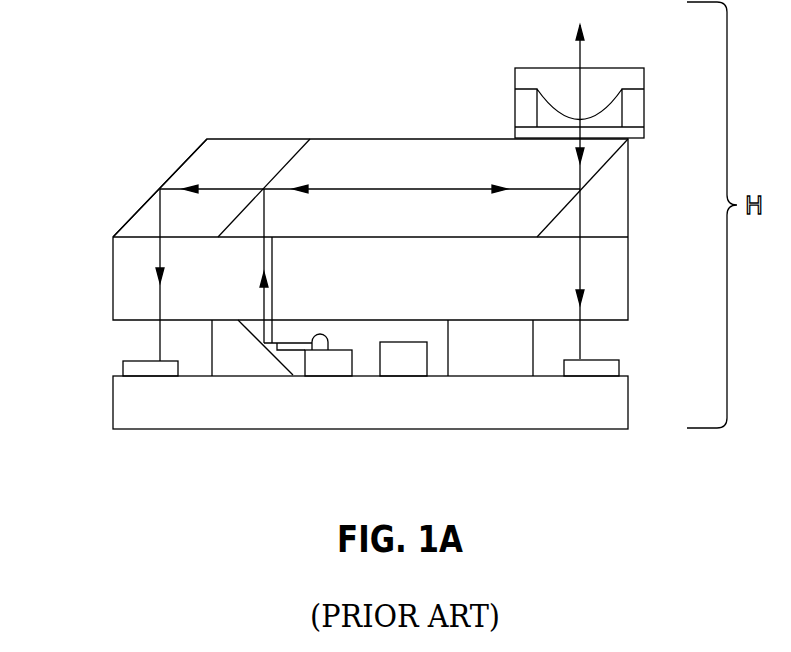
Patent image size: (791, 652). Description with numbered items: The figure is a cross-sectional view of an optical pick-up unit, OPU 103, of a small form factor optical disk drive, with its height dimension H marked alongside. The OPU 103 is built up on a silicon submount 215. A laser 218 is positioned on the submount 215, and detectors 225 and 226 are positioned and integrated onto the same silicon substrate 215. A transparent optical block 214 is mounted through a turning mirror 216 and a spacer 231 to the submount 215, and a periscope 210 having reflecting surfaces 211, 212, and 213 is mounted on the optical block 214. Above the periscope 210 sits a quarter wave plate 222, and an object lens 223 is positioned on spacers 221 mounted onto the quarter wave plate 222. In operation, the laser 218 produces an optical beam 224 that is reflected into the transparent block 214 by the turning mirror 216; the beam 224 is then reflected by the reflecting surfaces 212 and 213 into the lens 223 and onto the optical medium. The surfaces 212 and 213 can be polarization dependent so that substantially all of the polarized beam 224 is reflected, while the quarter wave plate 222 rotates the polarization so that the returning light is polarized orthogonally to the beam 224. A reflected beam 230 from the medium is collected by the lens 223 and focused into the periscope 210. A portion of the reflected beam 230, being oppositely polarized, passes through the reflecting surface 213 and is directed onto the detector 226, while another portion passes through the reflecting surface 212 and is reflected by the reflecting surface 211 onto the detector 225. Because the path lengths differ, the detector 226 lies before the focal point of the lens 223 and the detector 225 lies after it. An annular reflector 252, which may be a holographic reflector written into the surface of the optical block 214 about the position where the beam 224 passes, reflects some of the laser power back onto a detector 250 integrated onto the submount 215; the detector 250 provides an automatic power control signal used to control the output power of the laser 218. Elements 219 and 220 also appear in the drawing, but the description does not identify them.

The optical pick-up unit 103 is at (105, 138).
The periscope 210 is at (135, 213).
The reflecting surface 211 is at (152, 186).
The reflecting surface 212 is at (288, 160).
The reflecting surface 213 is at (595, 173).
The transparent optical block 214 is at (630, 310).
The silicon submount 215 is at (113, 405).
The turning mirror 216 is at (245, 358).
The laser 218 is at (313, 343).
The photodetector 219 is at (408, 358).
The spacer 220 is at (552, 358).
The spacers 221 is at (644, 100).
The quarter wave plate 222 is at (644, 131).
The object lens 223 is at (596, 80).
The optical beam 224 is at (505, 182).
The detector 225 is at (578, 55).
The detector 226 is at (620, 366).
The reflected beam 230 is at (225, 185).
The spacer 231 is at (502, 358).
The detector 250 is at (302, 363).
The annular reflector 252 is at (270, 236).